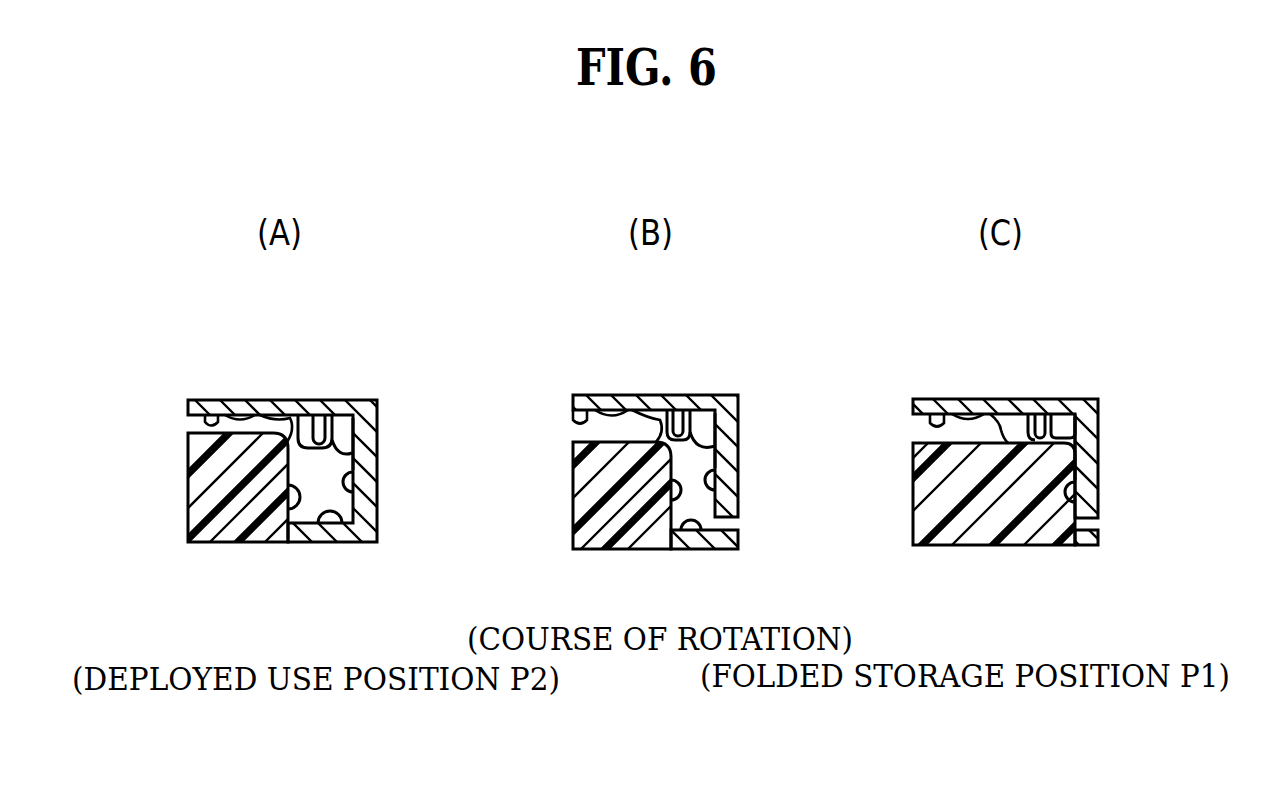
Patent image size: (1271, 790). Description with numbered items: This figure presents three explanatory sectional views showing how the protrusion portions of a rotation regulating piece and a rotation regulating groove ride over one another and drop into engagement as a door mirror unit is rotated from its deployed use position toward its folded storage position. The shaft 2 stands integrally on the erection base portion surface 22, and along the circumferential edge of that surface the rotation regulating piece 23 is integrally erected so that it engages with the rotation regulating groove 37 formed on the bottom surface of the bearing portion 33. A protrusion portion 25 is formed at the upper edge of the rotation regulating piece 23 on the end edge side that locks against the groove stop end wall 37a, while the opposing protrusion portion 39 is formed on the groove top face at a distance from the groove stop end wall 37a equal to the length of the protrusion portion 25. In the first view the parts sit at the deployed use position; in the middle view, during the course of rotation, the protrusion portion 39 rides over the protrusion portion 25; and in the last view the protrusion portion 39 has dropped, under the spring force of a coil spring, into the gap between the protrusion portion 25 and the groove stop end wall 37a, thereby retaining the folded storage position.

The shaft 2 is at (186, 507).
The erection base portion surface 22 is at (318, 528).
The rotation regulating piece 23 is at (287, 505).
The protrusion portion 25 is at (282, 410).
The bearing portion 33 is at (357, 400).
The rotation regulating groove 37 is at (222, 410).
The groove stop end wall 37a is at (352, 484).
The protrusion portion 39 is at (360, 420).